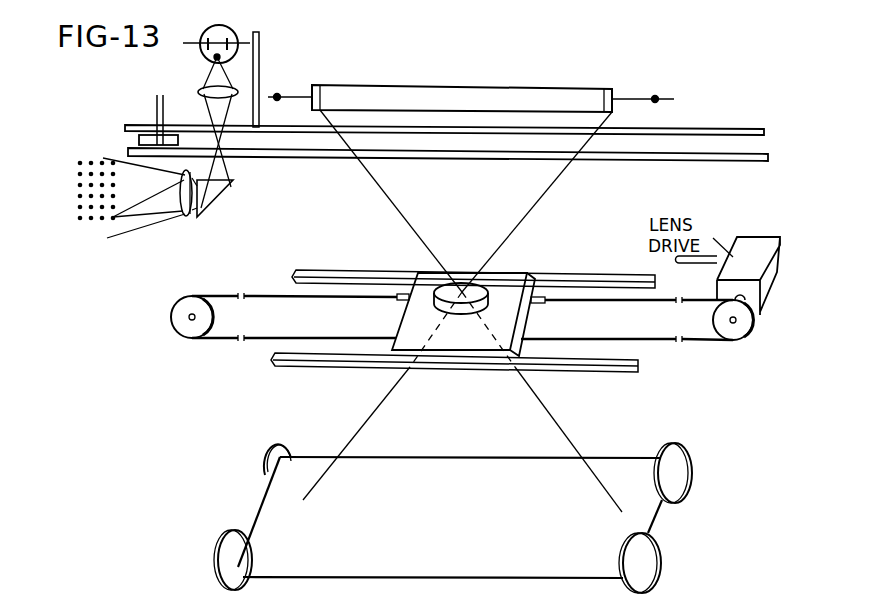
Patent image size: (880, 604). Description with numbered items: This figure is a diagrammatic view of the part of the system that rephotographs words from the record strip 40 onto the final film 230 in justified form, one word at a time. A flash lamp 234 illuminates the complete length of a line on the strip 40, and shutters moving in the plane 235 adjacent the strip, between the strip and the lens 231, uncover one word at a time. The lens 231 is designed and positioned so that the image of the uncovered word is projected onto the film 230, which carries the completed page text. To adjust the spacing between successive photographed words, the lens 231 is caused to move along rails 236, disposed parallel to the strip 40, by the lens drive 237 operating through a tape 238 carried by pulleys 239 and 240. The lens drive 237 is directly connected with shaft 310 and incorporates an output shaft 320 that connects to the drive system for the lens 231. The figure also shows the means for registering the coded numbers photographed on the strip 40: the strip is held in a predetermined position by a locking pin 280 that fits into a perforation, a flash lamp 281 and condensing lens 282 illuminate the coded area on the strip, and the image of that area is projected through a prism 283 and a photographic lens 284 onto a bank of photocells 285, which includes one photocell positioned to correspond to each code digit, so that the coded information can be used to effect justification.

The strip 40 is at (708, 130).
The film 230 is at (459, 466).
The lens 231 is at (463, 283).
The flash lamp 234 is at (413, 89).
The plane 235 is at (607, 160).
The rails 236 is at (583, 271).
The lens drive 237 is at (762, 295).
The tape 238 is at (259, 294).
The pulley 239 is at (176, 315).
The pulley 240 is at (737, 333).
The locking pin 280 is at (157, 104).
The flash lamp 281 is at (226, 31).
The condensing lens 282 is at (195, 91).
The prism 283 is at (218, 193).
The photographic lens 284 is at (183, 214).
The bank of photocells 285 is at (95, 244).
The shaft 310 is at (677, 259).
The output shaft 320 is at (729, 333).